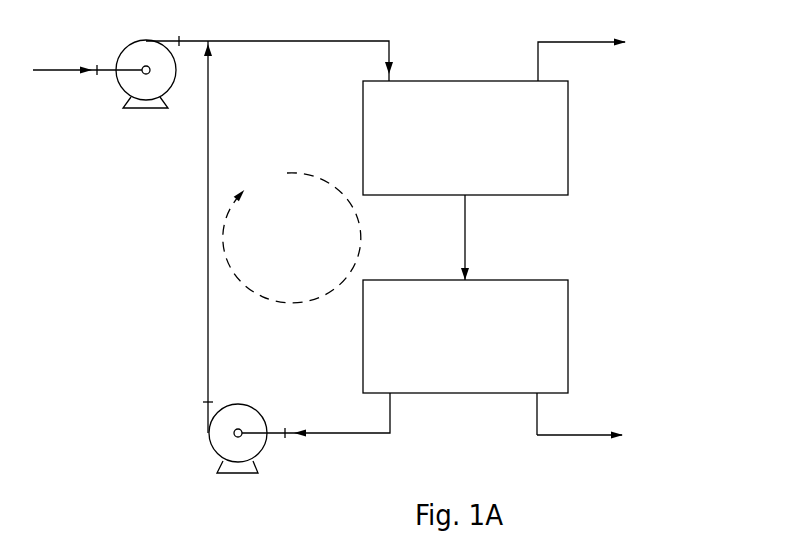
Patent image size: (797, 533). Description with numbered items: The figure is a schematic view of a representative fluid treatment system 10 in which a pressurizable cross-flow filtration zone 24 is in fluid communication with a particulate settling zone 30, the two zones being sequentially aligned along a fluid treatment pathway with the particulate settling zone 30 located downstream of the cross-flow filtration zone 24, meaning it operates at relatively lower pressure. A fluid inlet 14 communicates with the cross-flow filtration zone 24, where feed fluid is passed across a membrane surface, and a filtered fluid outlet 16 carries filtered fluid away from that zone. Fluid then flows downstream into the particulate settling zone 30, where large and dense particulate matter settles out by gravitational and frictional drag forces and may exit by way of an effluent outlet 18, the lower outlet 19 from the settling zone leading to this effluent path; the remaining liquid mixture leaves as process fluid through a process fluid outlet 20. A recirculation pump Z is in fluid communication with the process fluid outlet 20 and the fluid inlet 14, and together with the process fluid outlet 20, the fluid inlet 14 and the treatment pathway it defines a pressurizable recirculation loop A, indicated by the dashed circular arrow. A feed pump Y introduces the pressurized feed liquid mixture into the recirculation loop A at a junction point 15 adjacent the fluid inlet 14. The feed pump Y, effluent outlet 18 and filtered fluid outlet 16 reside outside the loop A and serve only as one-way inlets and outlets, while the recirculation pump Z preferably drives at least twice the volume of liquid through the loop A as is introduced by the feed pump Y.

The system 10 is at (647, 97).
The fluid inlet 14 is at (389, 50).
The junction point 15 is at (208, 41).
The filtered fluid outlet 16 is at (597, 56).
The effluent outlet 18 is at (582, 436).
The second unit outlet 19 is at (539, 396).
The process fluid outlet 20 is at (347, 435).
The cross-flow filtration zone 24 is at (568, 158).
The particulate settling zone 30 is at (568, 358).
The recirculation loop A is at (324, 298).
The feed pump Y is at (122, 92).
The recirculation pump Z is at (212, 450).